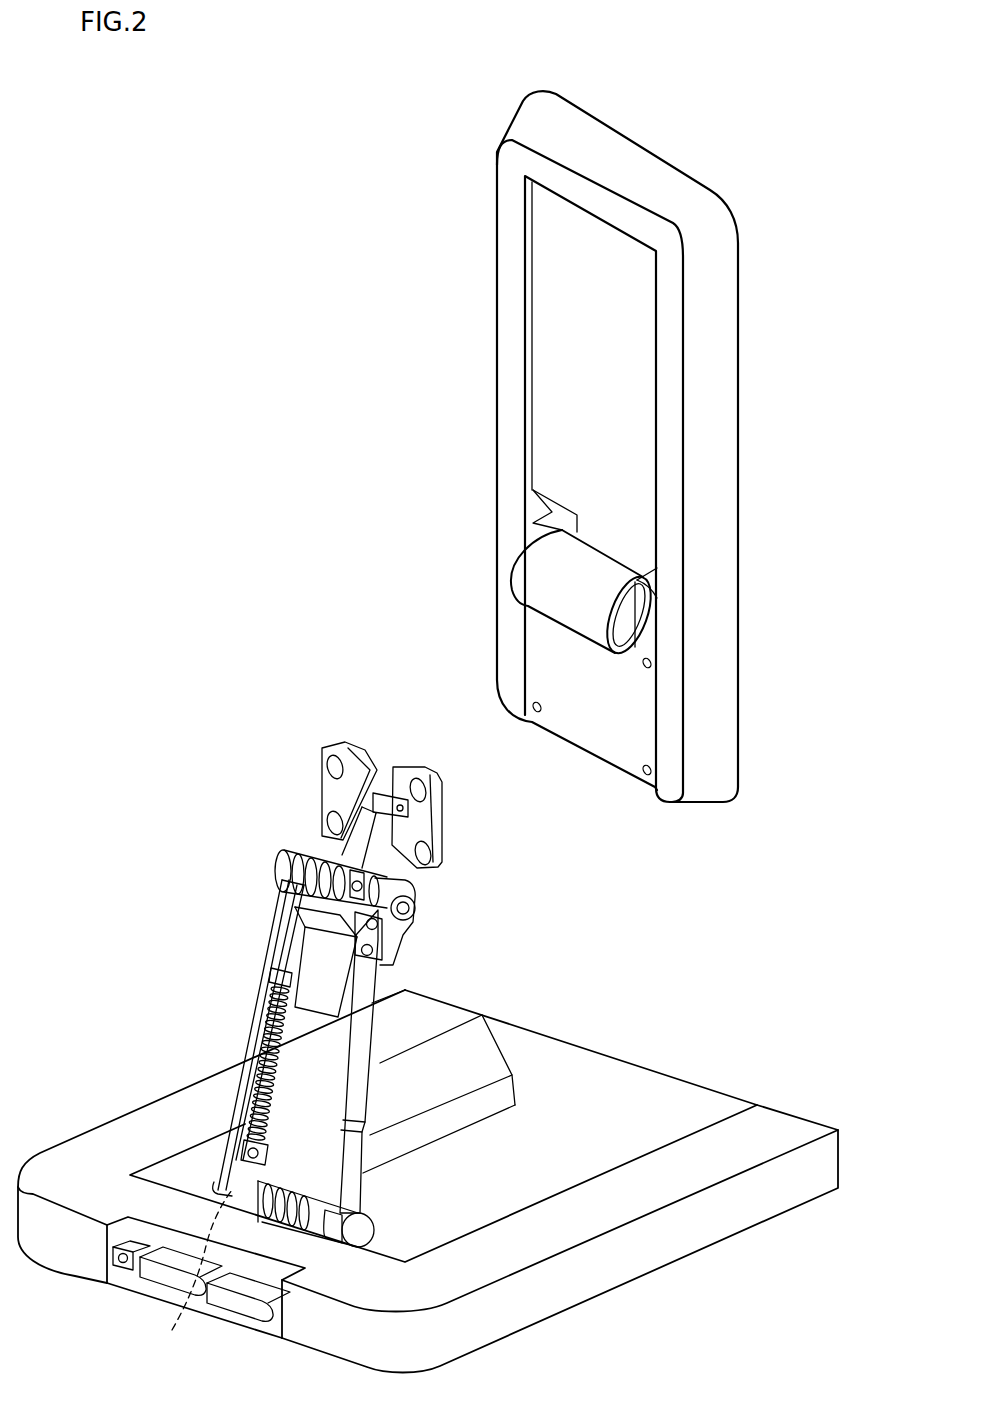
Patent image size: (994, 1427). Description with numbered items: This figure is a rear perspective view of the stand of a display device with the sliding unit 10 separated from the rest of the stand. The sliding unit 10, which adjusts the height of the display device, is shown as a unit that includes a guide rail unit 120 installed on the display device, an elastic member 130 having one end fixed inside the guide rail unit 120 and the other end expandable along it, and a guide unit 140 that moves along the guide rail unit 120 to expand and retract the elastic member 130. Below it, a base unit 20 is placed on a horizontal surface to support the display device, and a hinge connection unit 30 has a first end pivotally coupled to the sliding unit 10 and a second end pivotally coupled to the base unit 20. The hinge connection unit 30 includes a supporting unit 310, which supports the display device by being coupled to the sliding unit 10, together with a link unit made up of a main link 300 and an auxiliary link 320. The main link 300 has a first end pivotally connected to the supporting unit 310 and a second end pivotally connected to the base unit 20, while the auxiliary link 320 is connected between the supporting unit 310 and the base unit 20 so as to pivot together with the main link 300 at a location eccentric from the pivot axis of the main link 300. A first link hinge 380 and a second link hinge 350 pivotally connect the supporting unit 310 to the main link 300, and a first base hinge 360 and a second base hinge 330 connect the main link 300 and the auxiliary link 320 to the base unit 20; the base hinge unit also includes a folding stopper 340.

The sliding unit 10 is at (385, 350).
The guide rail unit 120 is at (512, 352).
The elastic member 130 is at (545, 562).
The guide unit 140 is at (545, 657).
The base unit 20 is at (743, 1133).
The hinge connection unit 30 is at (202, 730).
The main link 300 is at (348, 1040).
The supporting unit 310 is at (475, 835).
The auxiliary link 320 is at (221, 1009).
The second base hinge 330 is at (203, 1162).
The folding stopper 340 is at (189, 1273).
The second link hinge 350 is at (259, 864).
The first base hinge 360 is at (390, 1209).
The first link hinge 380 is at (437, 920).